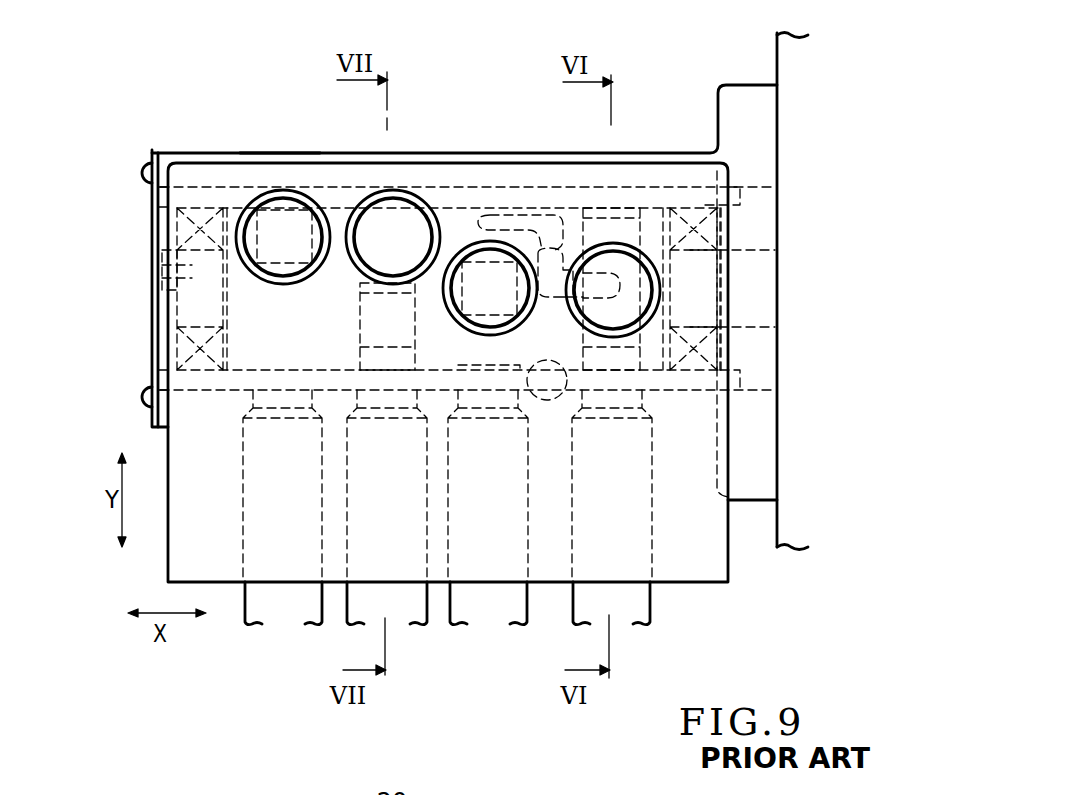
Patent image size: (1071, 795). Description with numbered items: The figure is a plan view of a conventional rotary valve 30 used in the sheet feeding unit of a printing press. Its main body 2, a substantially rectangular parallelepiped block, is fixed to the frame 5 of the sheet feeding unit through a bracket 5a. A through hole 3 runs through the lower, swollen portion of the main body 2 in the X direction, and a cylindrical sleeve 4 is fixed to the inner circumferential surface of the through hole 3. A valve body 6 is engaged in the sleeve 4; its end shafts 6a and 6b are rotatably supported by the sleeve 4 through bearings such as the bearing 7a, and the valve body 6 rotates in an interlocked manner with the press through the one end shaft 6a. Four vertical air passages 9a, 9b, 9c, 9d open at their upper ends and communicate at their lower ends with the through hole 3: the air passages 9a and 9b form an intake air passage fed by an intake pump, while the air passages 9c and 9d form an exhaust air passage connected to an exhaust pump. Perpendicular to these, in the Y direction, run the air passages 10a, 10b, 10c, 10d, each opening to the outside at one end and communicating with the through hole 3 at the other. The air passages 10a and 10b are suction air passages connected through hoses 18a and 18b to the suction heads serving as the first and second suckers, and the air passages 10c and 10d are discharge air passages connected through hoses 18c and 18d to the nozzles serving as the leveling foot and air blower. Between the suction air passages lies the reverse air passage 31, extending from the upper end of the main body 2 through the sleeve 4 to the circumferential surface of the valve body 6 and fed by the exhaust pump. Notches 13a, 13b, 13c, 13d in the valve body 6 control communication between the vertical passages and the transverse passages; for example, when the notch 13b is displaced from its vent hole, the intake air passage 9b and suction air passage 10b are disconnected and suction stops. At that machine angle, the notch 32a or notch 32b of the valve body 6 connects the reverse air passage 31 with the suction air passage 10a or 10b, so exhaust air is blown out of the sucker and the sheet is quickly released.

The main body 2 is at (732, 572).
The through hole 3 is at (673, 205).
The cylindrical sleeve 4 is at (553, 160).
The frame 5 is at (748, 83).
The bracket 5a is at (276, 151).
The valve body 6 is at (447, 153).
The end shaft 6a is at (700, 287).
The end shaft 6b is at (160, 267).
The bearing 7a is at (203, 204).
The air passage 9a is at (657, 297).
The air passage 9b is at (537, 291).
The air passage 9c is at (410, 190).
The air passage 9d is at (301, 190).
The air passage 10a is at (652, 552).
The air passage 10b is at (528, 552).
The air passage 10c is at (427, 552).
The air passage 10d is at (322, 552).
The cavity 13a is at (643, 205).
The notch 13b is at (478, 316).
The cavity 13c is at (360, 288).
The cavity 13d is at (272, 265).
The hose 18a is at (652, 604).
The hose 18b is at (450, 606).
The hose 18c is at (347, 602).
The hose 18d is at (245, 598).
The rotary valve 30 is at (480, 105).
The reverse air passage 31 is at (547, 402).
The notch 32a is at (563, 250).
The notch 32b is at (505, 213).